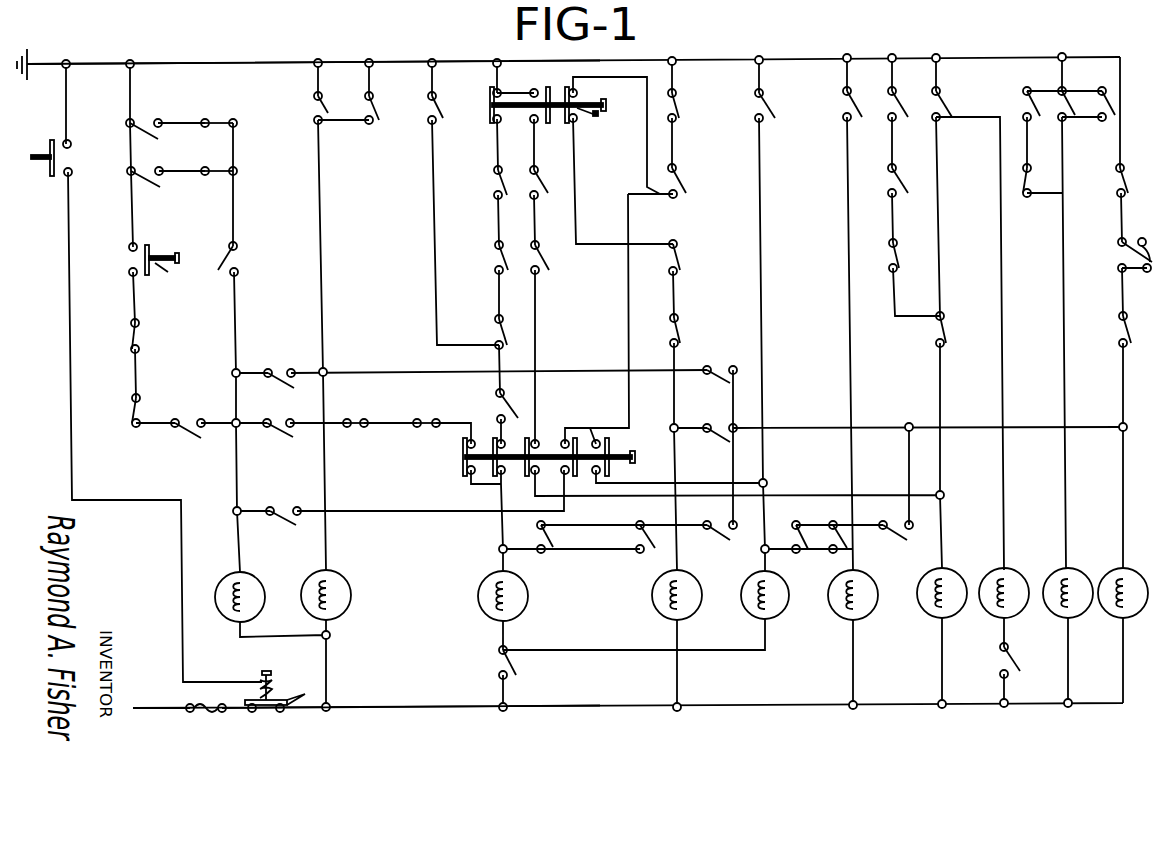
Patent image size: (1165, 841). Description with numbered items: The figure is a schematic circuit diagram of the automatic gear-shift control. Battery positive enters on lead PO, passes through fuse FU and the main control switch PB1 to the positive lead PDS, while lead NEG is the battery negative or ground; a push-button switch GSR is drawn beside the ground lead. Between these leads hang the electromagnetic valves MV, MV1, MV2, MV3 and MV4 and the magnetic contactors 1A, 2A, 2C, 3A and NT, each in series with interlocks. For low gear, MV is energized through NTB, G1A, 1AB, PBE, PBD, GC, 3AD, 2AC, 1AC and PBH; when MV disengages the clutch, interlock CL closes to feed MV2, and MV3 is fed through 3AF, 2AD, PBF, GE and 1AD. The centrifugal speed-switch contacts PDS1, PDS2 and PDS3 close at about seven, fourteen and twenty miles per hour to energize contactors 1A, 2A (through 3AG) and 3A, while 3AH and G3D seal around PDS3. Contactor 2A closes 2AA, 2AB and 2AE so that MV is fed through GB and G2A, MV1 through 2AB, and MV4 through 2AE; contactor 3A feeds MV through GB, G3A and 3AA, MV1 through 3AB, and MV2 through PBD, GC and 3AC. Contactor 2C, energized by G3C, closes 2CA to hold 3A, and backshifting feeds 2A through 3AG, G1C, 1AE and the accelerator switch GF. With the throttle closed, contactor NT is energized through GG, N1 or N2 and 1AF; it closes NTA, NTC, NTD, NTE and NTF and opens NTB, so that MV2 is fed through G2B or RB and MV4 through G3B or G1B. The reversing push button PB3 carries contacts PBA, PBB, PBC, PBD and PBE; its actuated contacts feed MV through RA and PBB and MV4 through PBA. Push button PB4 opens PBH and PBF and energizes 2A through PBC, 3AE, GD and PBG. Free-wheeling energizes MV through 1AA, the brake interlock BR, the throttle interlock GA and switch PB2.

The negative lead NEG is at (214, 62).
The ground start relay push button GSR is at (47, 179).
The interlock 2AA is at (145, 117).
The interlock G2A is at (238, 112).
The interlock 3AA is at (176, 162).
The interlock G3A is at (228, 168).
The push button switch PB2 is at (190, 243).
The interlock GB is at (239, 254).
The interlock 2AB is at (304, 107).
The interlock 3AB is at (371, 122).
The interlock 3AC is at (419, 108).
The push button contact PBG is at (549, 84).
The push button contact PBH is at (495, 126).
The push button switch PB4 is at (600, 120).
The push button contact PBF is at (578, 122).
The interlock 1AD is at (676, 107).
The interlock 2AE is at (748, 105).
The interlock GE is at (676, 173).
The interlock 2AD is at (677, 254).
The speed switch contact PDS1 is at (844, 92).
The circuit closing switch GF is at (889, 88).
The speed switch contact PDS2 is at (940, 90).
The speed switch contact PDS3 is at (1060, 89).
The interlock 3AH is at (1027, 114).
The contact 2CA is at (1110, 82).
The interlock G3D is at (1029, 180).
The interlock 1AF is at (1117, 180).
The interlock N2 is at (1140, 240).
The interlock N1 is at (1120, 248).
The interlock GG is at (1118, 318).
The interlock 1AC is at (494, 186).
The interlock GD is at (530, 182).
The interlock 2AC is at (496, 262).
The interlock 3AE is at (527, 257).
The interlock 1AE is at (890, 194).
The interlock G1C is at (894, 260).
The interlock 3AD is at (497, 333).
The interlock 3AF is at (692, 330).
The interlock 3AG is at (959, 329).
The interlock GA is at (140, 328).
The brake interlock contact BR is at (138, 408).
The interlock 1AA is at (209, 418).
The interlock NTA is at (282, 364).
The interlock NTB is at (300, 418).
The interlock G1A is at (354, 411).
The interlock 1AB is at (428, 410).
The interlock GC is at (500, 420).
The reversing push button switch PB3 is at (617, 463).
The push button contact PBE is at (460, 482).
The push button contact PBD is at (502, 488).
The push button contact PBC is at (545, 436).
The push button contact PBB is at (558, 432).
The push button contact PBA is at (600, 432).
The interlock NTC is at (720, 363).
The interlock NTD is at (716, 420).
The interlock RA is at (300, 508).
The interlock NTE is at (717, 519).
The interlock G2B is at (530, 537).
The interlock RB is at (638, 533).
The interlock G1B is at (789, 537).
The interlock G3B is at (848, 522).
The interlock NTF is at (892, 519).
The electromagnetic valve MV is at (251, 556).
The electromagnetic valve MV1 is at (331, 571).
The electromagnetic valve MV2 is at (478, 596).
The electromagnetic valve MV3 is at (652, 596).
The electromagnetic valve MV4 is at (758, 572).
The magnetic contactor 1A is at (853, 622).
The magnetic contactor 2A is at (938, 621).
The magnetic contactor 2C is at (1000, 621).
The magnetic contactor 3A is at (1066, 621).
The magnetic contactor NT is at (1110, 622).
The interlock CL is at (500, 675).
The interlock G3C is at (1004, 672).
The main control switch PB1 is at (258, 670).
The electric lead PO is at (166, 712).
The fuse FU is at (218, 712).
The positive lead PDS is at (420, 710).